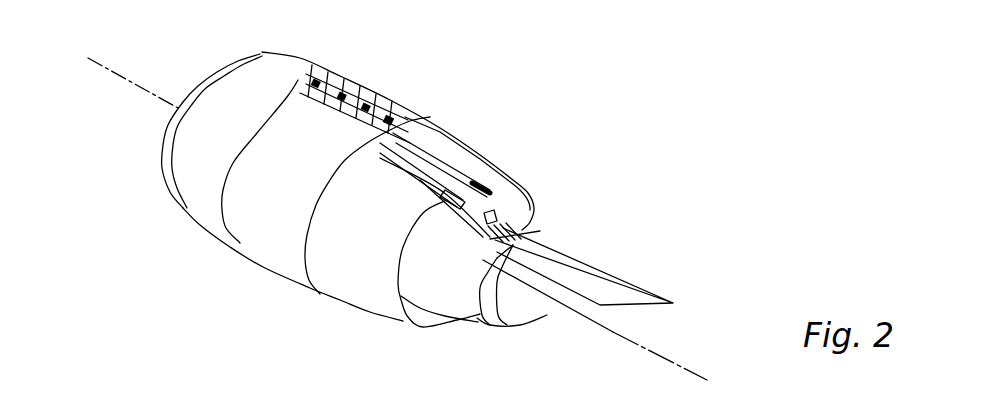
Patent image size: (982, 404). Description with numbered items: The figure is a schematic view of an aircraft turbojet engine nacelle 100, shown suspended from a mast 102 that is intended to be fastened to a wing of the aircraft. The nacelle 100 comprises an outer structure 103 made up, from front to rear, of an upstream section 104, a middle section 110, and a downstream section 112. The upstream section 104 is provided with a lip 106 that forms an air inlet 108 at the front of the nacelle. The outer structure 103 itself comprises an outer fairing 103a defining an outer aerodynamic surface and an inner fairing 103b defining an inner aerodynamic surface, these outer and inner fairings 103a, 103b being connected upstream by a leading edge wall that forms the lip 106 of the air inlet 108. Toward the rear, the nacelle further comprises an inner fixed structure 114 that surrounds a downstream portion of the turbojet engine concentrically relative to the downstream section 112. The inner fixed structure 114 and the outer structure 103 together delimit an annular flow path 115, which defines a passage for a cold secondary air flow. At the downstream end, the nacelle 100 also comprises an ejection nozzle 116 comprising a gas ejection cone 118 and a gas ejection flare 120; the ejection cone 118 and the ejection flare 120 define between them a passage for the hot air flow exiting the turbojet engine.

The nacelle 100 is at (559, 94).
The mast 102 is at (583, 263).
The outer structure 103 is at (214, 222).
The outer fairing 103a is at (481, 157).
The inner fairing 103b is at (425, 180).
The upstream section 104 is at (277, 73).
The lip 106 is at (204, 82).
The air inlet 108 is at (132, 127).
The middle section 110 is at (381, 107).
The downstream section 112 is at (444, 140).
The inner fixed structure 114 is at (447, 292).
The annular flow path 115 is at (423, 322).
The ejection nozzle 116 is at (527, 343).
The gas ejection cone 118 is at (563, 307).
The gas ejection flare 120 is at (487, 324).